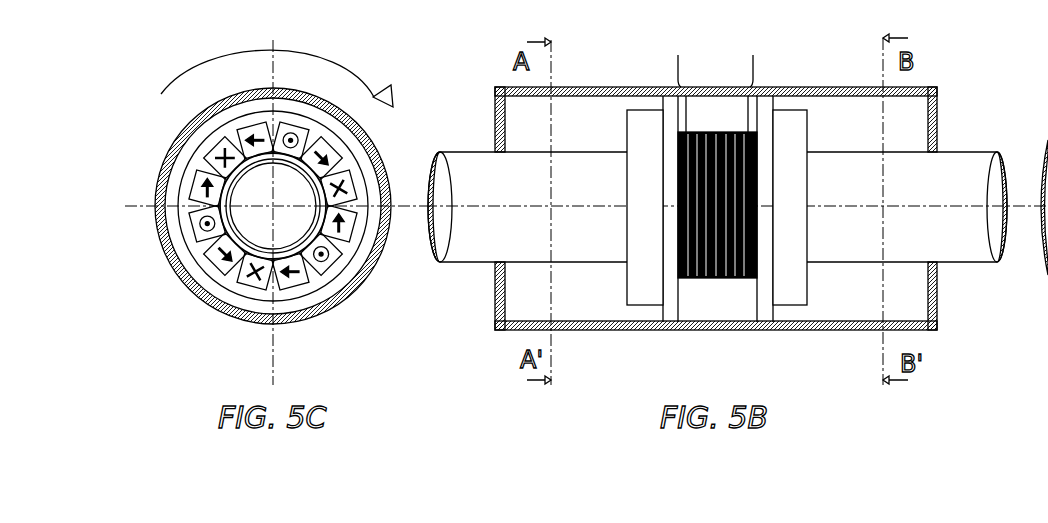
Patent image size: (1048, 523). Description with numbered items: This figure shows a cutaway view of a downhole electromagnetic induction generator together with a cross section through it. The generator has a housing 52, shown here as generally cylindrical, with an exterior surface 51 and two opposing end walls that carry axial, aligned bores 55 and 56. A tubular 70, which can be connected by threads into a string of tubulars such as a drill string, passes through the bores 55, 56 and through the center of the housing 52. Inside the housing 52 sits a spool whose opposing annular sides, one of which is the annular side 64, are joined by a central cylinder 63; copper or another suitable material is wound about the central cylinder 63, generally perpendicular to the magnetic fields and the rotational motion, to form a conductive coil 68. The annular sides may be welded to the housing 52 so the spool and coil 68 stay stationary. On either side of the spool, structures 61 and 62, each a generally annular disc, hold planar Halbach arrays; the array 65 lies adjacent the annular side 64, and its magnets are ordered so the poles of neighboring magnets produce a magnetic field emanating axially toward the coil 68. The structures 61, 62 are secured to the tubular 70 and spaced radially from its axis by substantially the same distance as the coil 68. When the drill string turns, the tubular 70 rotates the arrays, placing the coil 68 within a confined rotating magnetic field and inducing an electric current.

In FIG. 5B, the exterior surface 51 is at (787, 87).
In FIG. 5B, the housing 52 is at (616, 332).
In FIG. 5B, the bore 55 is at (495, 266).
In FIG. 5B, the bore 56 is at (940, 266).
In FIG. 5C, the structure 61 is at (455, 72).
In FIG. 5B, the structure 61 is at (650, 138).
In FIG. 5B, the structure 62 is at (797, 165).
In FIG. 5C, the central cylinder 63 is at (245, 172).
In FIG. 5C, the annular side 64 is at (167, 163).
In FIG. 5C, the Halbach array 65 is at (210, 258).
In FIG. 5C, the conductive coil 68 is at (333, 247).
In FIG. 5B, the conductive coil 68 is at (725, 278).
In FIG. 5B, the tubular 70 is at (966, 168).